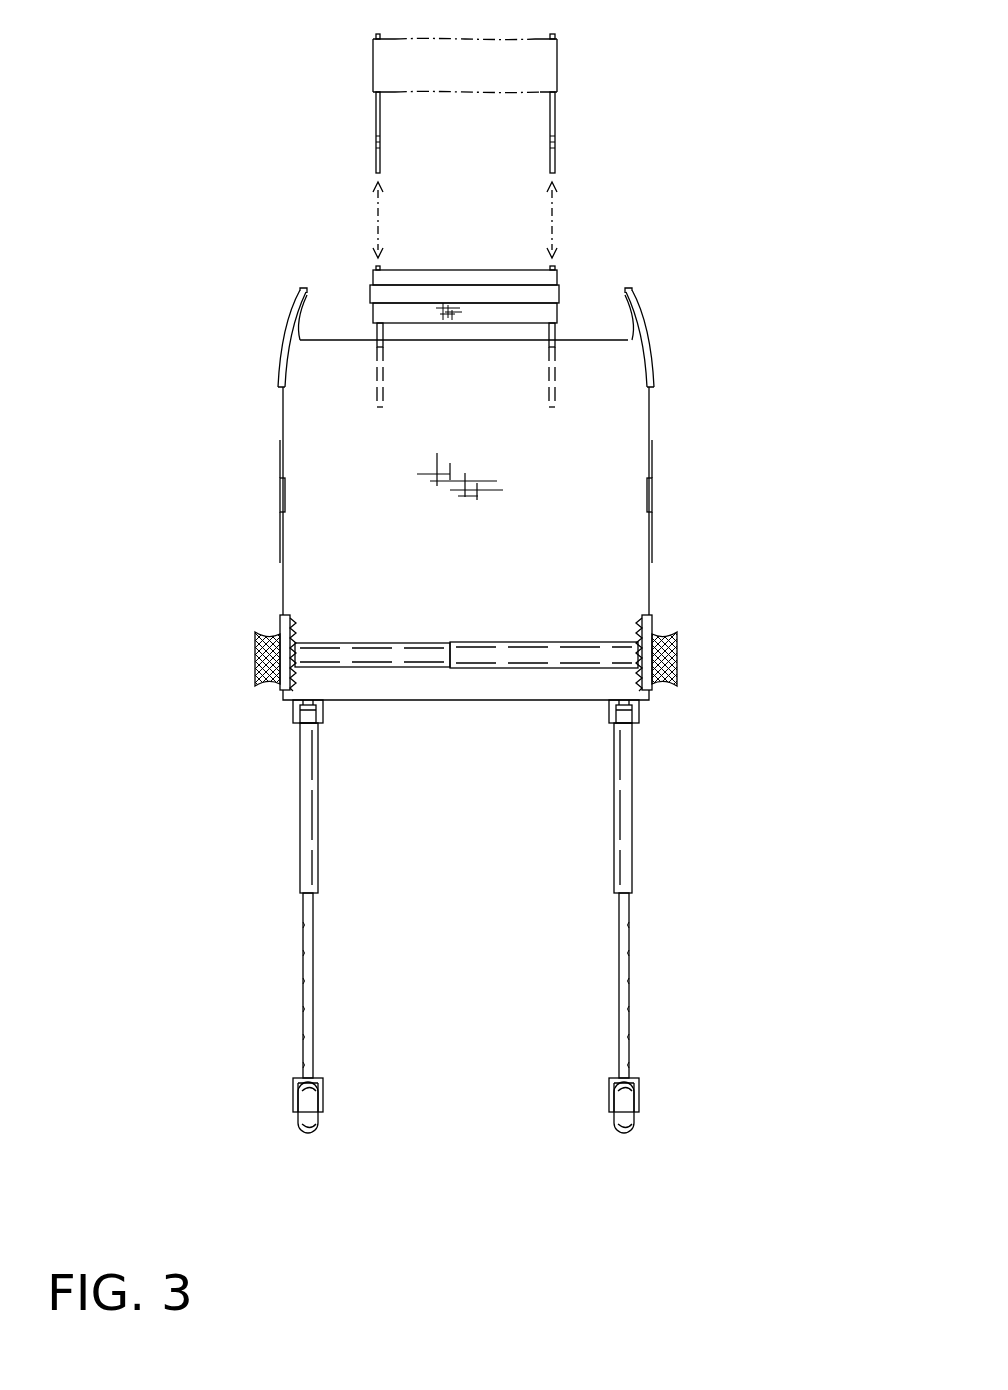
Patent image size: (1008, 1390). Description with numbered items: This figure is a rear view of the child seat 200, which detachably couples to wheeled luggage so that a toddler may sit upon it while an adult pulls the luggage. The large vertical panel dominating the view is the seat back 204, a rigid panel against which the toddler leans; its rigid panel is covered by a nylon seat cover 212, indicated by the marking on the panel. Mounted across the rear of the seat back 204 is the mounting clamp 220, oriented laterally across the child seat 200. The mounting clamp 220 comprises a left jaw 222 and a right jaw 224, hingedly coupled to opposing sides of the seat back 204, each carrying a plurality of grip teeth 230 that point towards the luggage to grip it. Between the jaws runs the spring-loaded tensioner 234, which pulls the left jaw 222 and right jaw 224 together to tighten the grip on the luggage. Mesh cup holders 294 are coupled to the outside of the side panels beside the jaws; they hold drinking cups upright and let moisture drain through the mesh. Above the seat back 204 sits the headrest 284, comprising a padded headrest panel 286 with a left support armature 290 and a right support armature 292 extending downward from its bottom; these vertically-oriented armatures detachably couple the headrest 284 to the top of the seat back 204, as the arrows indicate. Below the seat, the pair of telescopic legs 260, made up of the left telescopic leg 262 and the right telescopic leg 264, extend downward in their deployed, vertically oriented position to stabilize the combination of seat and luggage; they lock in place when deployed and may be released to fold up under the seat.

The child seat 200 is at (756, 286).
The seat back 204 is at (332, 520).
The nylon seat cover 212 is at (422, 463).
The mounting clamp 220 is at (242, 630).
The left jaw 222 is at (285, 701).
The right jaw 224 is at (648, 690).
The plurality of grip teeth 230 is at (293, 620).
The spring-loaded tensioner 234 is at (428, 650).
The pair of telescopic legs 260 is at (642, 1145).
The left telescopic leg 262 is at (300, 852).
The right telescopic leg 264 is at (623, 858).
The headrest 284 is at (673, 35).
The headrest panel 286 is at (465, 72).
The left support armature 290 is at (555, 128).
The right support armature 292 is at (376, 118).
The mesh cup holder 294 is at (270, 688).